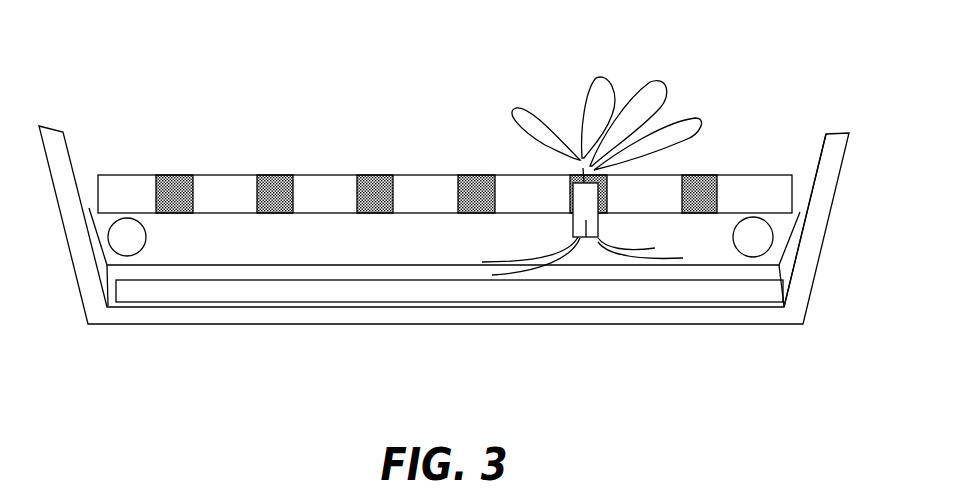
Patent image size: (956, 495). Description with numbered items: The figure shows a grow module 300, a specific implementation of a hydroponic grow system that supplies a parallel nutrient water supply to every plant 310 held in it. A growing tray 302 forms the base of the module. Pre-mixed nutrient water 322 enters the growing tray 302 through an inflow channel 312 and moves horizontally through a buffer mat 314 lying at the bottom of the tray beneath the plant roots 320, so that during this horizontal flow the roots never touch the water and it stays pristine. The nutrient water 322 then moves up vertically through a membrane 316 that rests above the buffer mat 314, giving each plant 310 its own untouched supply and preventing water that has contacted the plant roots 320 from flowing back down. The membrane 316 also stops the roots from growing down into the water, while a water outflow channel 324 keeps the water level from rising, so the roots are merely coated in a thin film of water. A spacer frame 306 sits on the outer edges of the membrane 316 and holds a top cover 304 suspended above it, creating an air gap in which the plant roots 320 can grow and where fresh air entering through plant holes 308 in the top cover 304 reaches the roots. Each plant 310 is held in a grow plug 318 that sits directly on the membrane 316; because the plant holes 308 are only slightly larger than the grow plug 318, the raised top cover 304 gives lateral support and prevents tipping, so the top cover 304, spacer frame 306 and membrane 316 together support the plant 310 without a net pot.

The grow module 300 is at (633, 425).
The growing tray 302 is at (60, 162).
The top cover 304 is at (128, 195).
The spacer frame 306 is at (133, 232).
The plant holes 308 is at (370, 183).
The plant 310 is at (610, 92).
The inflow channel 312 is at (98, 293).
The buffer mat 314 is at (245, 292).
The membrane 316 is at (447, 258).
The grow plug 318 is at (582, 237).
The plant roots 320 is at (593, 243).
The nutrient water 322 is at (728, 272).
The water outflow channel 324 is at (795, 292).